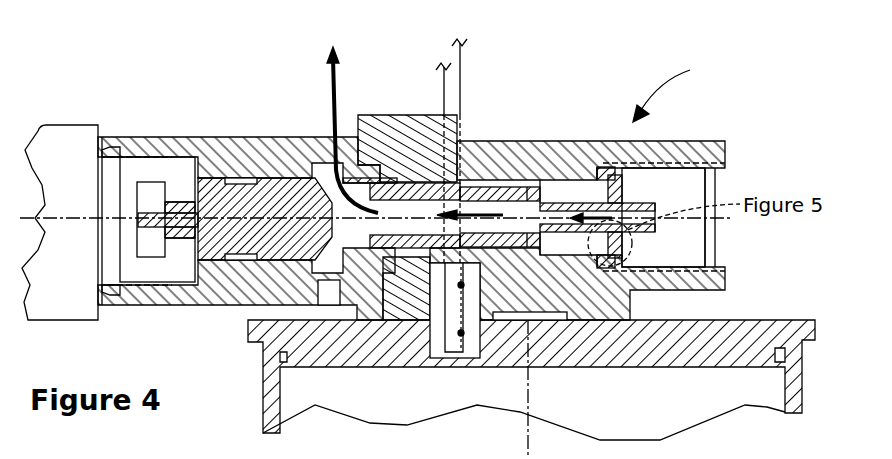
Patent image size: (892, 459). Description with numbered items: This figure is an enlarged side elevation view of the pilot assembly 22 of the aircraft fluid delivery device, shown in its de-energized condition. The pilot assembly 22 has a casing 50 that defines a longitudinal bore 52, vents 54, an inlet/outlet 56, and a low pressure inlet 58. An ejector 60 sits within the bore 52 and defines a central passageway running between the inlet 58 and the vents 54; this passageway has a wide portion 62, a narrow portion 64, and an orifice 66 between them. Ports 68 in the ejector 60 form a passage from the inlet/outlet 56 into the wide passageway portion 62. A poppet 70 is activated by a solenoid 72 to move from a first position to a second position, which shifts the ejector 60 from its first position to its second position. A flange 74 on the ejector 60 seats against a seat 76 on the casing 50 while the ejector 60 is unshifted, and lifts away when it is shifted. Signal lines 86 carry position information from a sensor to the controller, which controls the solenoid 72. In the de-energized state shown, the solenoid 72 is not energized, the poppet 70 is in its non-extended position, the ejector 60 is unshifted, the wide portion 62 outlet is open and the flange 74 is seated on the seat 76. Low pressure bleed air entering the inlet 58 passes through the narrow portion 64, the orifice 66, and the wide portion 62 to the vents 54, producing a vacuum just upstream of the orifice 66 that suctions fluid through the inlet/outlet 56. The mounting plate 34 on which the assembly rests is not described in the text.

The pilot assembly 22 is at (676, 91).
The mounting plate 34 is at (697, 345).
The casing 50 is at (478, 130).
The longitudinal bore 52 is at (683, 200).
The vents 54 is at (318, 147).
The inlet/outlet 56 is at (532, 298).
The low pressure inlet 58 is at (720, 188).
The ejector 60 is at (545, 150).
The wide portion 62 is at (402, 207).
The narrow portion 64 is at (643, 223).
The orifice 66 is at (548, 140).
The ports 68 is at (517, 247).
The poppet 70 is at (277, 188).
The solenoid 72 is at (70, 308).
The flange 74 is at (623, 167).
The seat 76 is at (578, 190).
The signal lines 86 is at (447, 82).